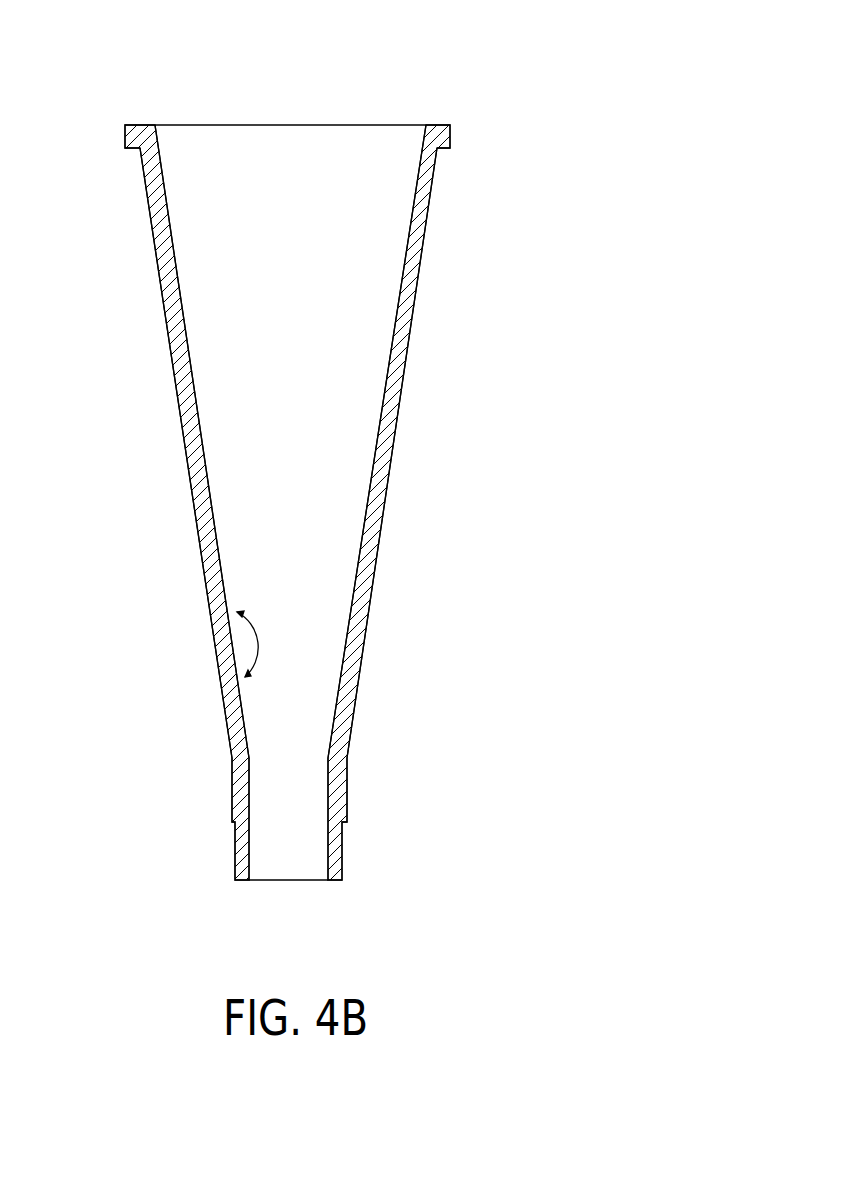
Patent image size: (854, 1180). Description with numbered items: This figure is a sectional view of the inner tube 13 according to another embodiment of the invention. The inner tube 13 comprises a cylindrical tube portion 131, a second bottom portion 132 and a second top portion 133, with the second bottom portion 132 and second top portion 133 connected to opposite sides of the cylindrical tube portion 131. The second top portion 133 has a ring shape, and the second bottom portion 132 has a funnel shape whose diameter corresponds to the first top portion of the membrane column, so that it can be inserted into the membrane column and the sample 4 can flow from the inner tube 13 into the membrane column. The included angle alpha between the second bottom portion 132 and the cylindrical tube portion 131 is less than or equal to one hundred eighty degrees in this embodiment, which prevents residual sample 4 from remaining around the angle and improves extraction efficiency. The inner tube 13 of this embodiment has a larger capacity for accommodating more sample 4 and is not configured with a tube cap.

The inner tube 13 is at (423, 67).
The second top portion 133 is at (126, 137).
The cylindrical tube portion 131 is at (170, 347).
The second bottom portion 132 is at (226, 716).
The sample 4 is at (337, 503).